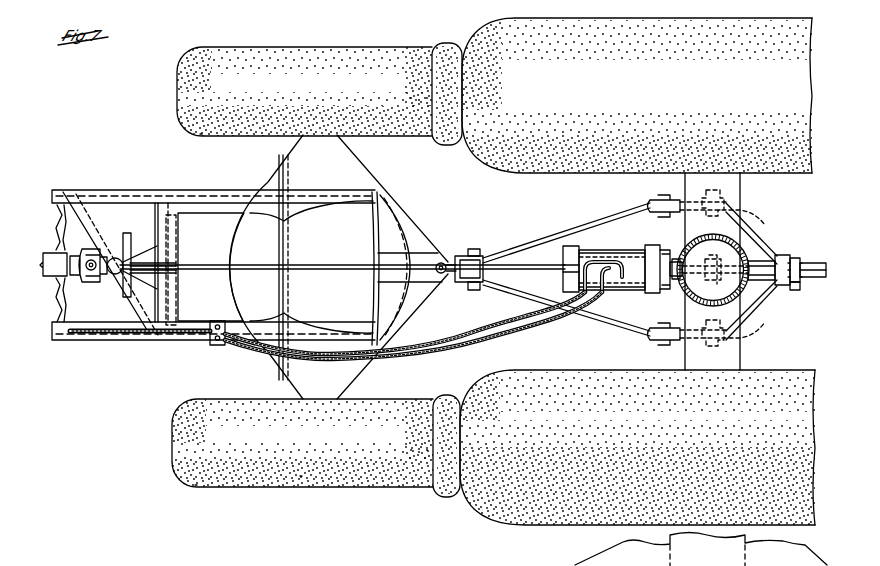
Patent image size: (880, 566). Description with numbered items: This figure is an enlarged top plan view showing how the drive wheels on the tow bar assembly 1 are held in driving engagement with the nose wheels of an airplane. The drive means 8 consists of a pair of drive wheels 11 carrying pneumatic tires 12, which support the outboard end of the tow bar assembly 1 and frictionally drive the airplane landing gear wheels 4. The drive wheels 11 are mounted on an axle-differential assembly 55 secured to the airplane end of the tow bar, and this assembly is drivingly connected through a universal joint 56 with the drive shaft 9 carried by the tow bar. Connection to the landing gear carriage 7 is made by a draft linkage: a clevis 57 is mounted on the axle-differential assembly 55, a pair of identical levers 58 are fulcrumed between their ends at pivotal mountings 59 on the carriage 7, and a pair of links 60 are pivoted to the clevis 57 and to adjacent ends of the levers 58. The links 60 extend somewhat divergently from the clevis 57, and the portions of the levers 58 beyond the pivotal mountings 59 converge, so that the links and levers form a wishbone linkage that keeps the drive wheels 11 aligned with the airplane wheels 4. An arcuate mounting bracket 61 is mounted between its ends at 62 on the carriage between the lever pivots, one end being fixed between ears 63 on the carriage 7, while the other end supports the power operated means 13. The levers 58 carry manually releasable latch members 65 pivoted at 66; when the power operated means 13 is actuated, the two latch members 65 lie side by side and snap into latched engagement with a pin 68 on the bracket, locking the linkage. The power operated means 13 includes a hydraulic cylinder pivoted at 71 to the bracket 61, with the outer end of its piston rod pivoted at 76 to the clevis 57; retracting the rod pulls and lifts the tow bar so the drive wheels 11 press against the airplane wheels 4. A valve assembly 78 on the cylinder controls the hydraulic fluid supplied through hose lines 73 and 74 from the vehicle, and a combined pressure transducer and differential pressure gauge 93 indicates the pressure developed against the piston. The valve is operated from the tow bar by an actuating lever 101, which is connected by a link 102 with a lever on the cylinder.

The tow bar assembly 1 is at (119, 186).
The landing gear wheels 4 is at (510, 172).
The landing gear carriage 7 is at (746, 366).
The drive means 8 is at (303, 484).
The drive shaft 9 is at (58, 275).
The drive wheels 11 is at (190, 97).
The pneumatic tires 12 is at (228, 128).
The power operated means 13 is at (614, 246).
The axle-differential assembly 55 is at (354, 172).
The universal joint 56 is at (100, 280).
The clevis 57 is at (468, 254).
The levers 58 is at (672, 199).
The pivotal mountings 59 is at (722, 199).
The links 60 is at (566, 232).
The arcuate mounting bracket 61 is at (672, 282).
The bracket mounting 62 is at (706, 280).
The ears 63 is at (779, 254).
The latch members 65 is at (808, 262).
The latch pivot 66 is at (795, 257).
The pin 68 is at (788, 288).
The cylinder pivot 71 is at (672, 252).
The hydraulic hose line 73 is at (542, 326).
The hydraulic hose line 74 is at (535, 324).
The piston rod pivot 76 is at (476, 250).
The valve assembly 78 is at (591, 256).
The pressure transducer and differential pressure gauge 93 is at (664, 256).
The actuating lever 101 is at (118, 256).
The link 102 is at (205, 264).